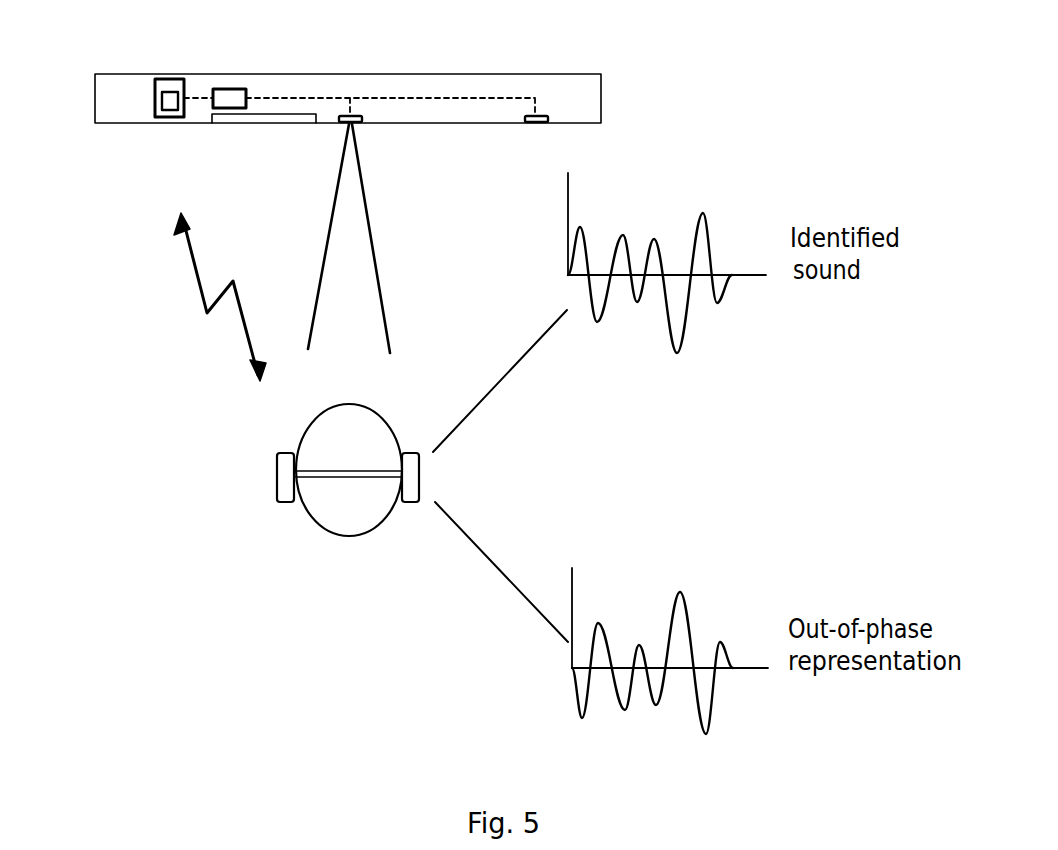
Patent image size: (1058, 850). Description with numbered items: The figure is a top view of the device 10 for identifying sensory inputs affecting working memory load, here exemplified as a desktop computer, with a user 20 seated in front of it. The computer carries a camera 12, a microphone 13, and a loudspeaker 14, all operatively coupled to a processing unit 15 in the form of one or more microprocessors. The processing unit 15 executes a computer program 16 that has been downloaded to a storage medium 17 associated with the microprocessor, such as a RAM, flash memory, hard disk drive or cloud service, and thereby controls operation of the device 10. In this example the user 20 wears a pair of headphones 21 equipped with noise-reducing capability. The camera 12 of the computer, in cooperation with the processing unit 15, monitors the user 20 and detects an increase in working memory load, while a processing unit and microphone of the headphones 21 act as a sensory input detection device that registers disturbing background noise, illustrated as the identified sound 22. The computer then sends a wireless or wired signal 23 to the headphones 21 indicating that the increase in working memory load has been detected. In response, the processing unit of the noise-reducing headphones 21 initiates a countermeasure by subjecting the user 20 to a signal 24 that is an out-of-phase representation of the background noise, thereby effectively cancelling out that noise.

The device 10 is at (112, 55).
The camera 12 is at (350, 116).
The microphone 13 is at (545, 116).
The loudspeaker 14 is at (246, 122).
The processing unit 15 is at (230, 90).
The computer program 16 is at (166, 110).
The storage medium 17 is at (172, 82).
The user 20 is at (378, 426).
The headphones 21 is at (412, 489).
The identified sound 22 is at (703, 212).
The signal 23 is at (193, 309).
The out-of-phase signal 24 is at (683, 592).